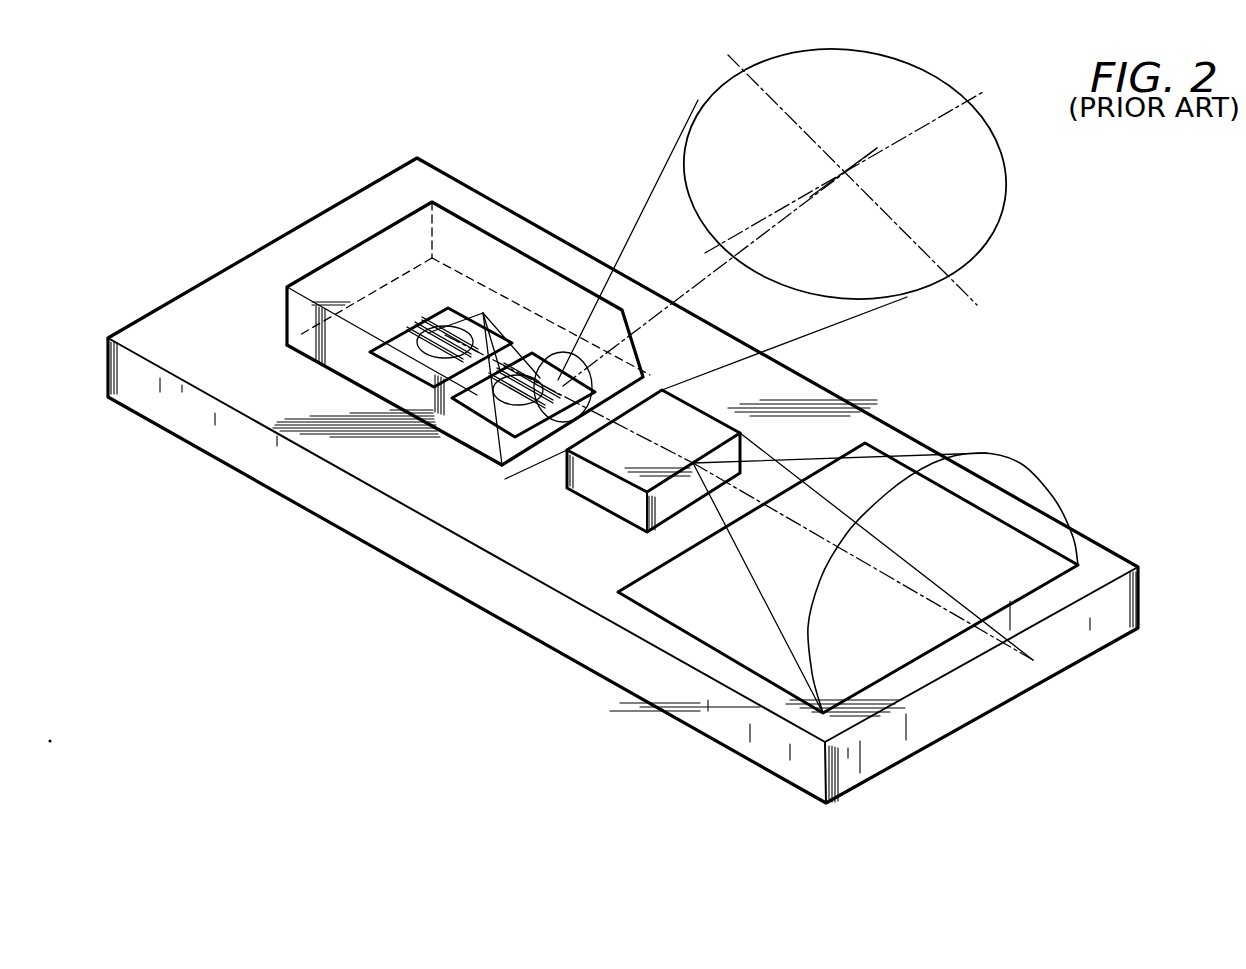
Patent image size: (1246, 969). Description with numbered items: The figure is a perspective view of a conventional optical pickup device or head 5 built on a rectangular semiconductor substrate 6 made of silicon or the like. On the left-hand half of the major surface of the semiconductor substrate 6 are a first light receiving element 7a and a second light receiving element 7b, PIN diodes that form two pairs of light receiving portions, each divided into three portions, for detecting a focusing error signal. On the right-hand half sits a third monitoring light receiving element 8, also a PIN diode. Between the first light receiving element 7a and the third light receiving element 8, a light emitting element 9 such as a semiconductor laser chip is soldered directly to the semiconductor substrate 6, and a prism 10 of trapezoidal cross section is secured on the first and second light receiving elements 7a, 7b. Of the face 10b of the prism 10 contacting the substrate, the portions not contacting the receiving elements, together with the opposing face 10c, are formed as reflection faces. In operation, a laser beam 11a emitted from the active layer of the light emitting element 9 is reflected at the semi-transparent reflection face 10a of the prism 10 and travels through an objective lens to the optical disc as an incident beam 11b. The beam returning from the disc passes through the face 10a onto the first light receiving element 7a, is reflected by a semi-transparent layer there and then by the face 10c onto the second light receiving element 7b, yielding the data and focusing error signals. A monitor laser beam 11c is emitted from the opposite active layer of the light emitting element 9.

The optical pickup device 5 is at (176, 165).
The semiconductor substrate 6 is at (1007, 690).
The first light receiving element 7a is at (532, 353).
The second light receiving element 7b is at (448, 308).
The third monitoring light receiving element 8 is at (730, 642).
The light emitting element 9 is at (612, 500).
The prism 10 is at (382, 228).
The semi-transparent reflection face 10a is at (505, 436).
The face of the prism contacting the substrate 10b is at (313, 365).
The face of the prism opposing face 10b 10c is at (385, 308).
The laser beam 11a is at (605, 490).
The incident beam 11b is at (847, 305).
The monitor laser beam 11c is at (910, 457).